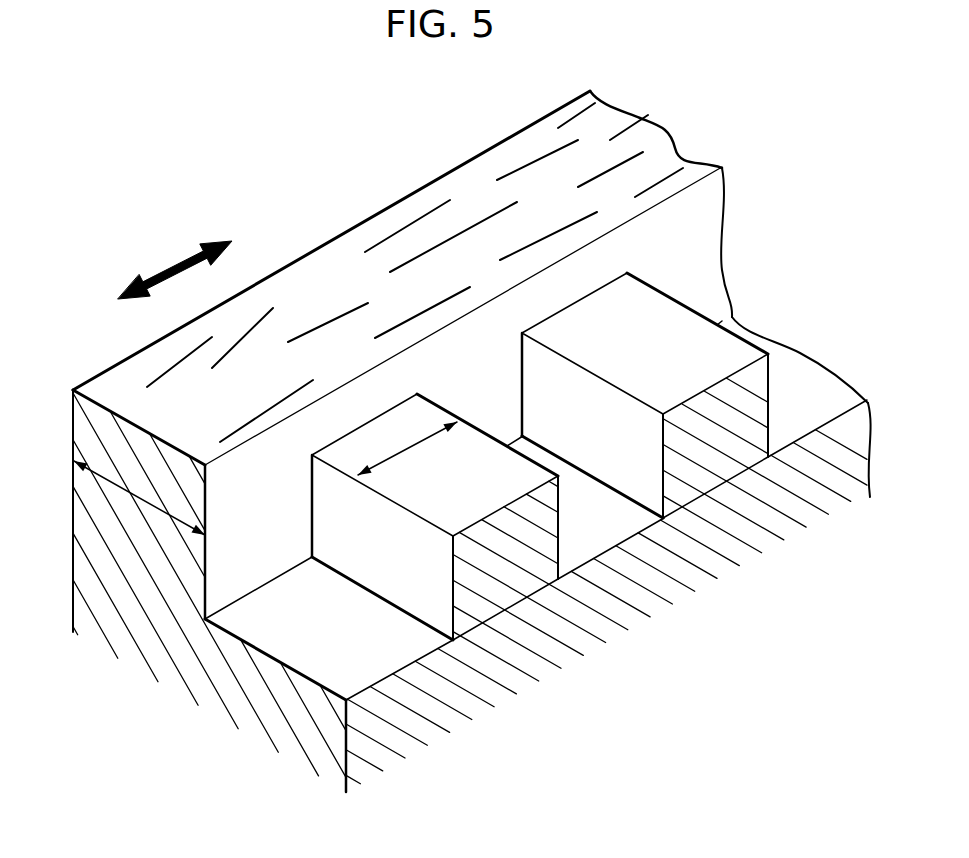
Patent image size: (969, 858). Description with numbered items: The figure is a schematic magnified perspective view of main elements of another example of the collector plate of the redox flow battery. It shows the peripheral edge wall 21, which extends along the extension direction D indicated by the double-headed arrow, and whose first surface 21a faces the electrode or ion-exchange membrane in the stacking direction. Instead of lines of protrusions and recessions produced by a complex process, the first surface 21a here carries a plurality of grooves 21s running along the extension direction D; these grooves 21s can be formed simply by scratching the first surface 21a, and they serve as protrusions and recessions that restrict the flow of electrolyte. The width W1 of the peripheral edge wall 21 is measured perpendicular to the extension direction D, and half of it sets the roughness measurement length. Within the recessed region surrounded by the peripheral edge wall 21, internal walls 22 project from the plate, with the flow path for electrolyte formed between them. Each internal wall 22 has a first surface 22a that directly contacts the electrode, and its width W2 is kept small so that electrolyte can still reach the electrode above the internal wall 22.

The peripheral edge wall 21 is at (472, 426).
The first surface of the peripheral edge wall 21a is at (397, 262).
The grooves 21s is at (667, 170).
The internal wall 22 is at (584, 503).
The first surface of the internal wall 22a is at (493, 485).
The extension direction D is at (175, 263).
The width of the peripheral edge wall W1 is at (107, 477).
The width of the internal wall W2 is at (422, 438).